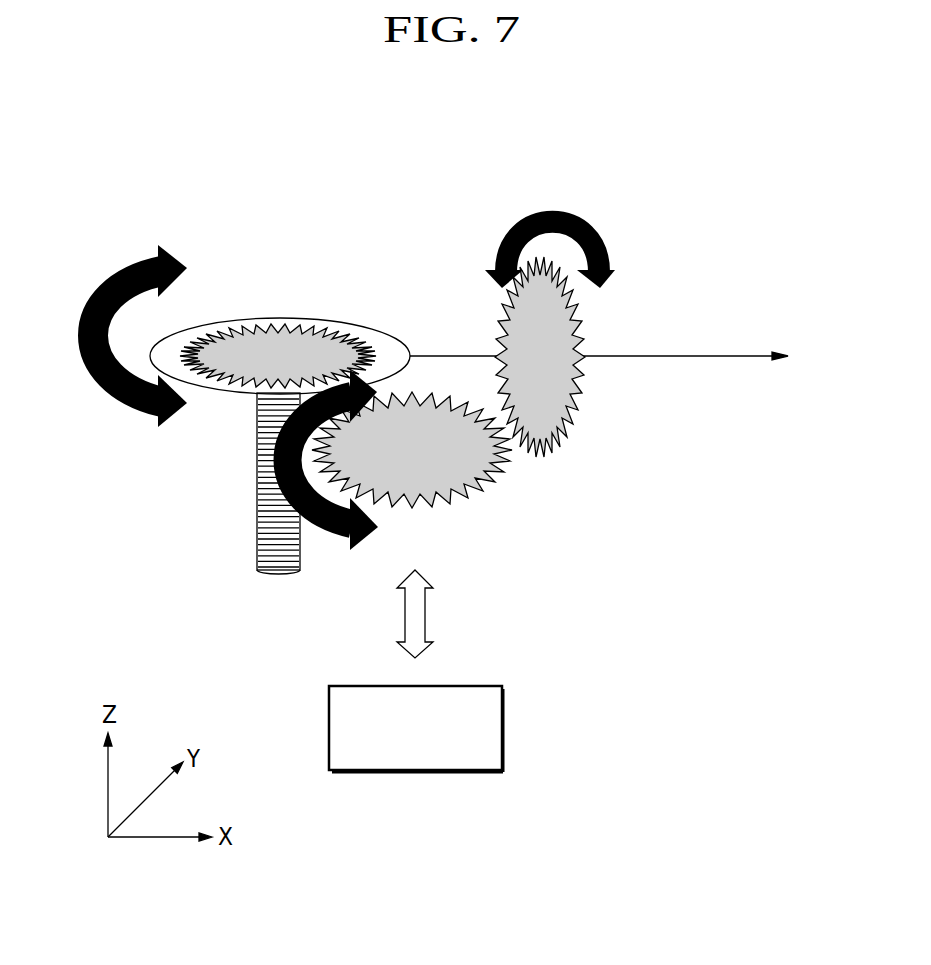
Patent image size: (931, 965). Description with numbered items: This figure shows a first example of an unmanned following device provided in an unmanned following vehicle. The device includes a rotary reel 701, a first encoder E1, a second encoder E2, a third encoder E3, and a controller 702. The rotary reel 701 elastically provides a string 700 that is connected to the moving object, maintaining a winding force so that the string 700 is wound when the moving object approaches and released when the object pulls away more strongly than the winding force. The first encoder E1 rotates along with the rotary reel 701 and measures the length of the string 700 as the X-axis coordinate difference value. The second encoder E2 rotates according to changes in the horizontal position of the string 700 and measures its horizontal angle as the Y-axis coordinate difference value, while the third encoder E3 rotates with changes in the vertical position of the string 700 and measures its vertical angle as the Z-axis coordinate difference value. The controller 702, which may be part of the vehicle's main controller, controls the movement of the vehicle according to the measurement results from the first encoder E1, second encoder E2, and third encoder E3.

The string 700 is at (706, 355).
The rotary reel 701 is at (256, 558).
The controller 702 is at (440, 685).
The first encoder E1 is at (277, 343).
The second encoder E2 is at (448, 477).
The third encoder E3 is at (560, 327).